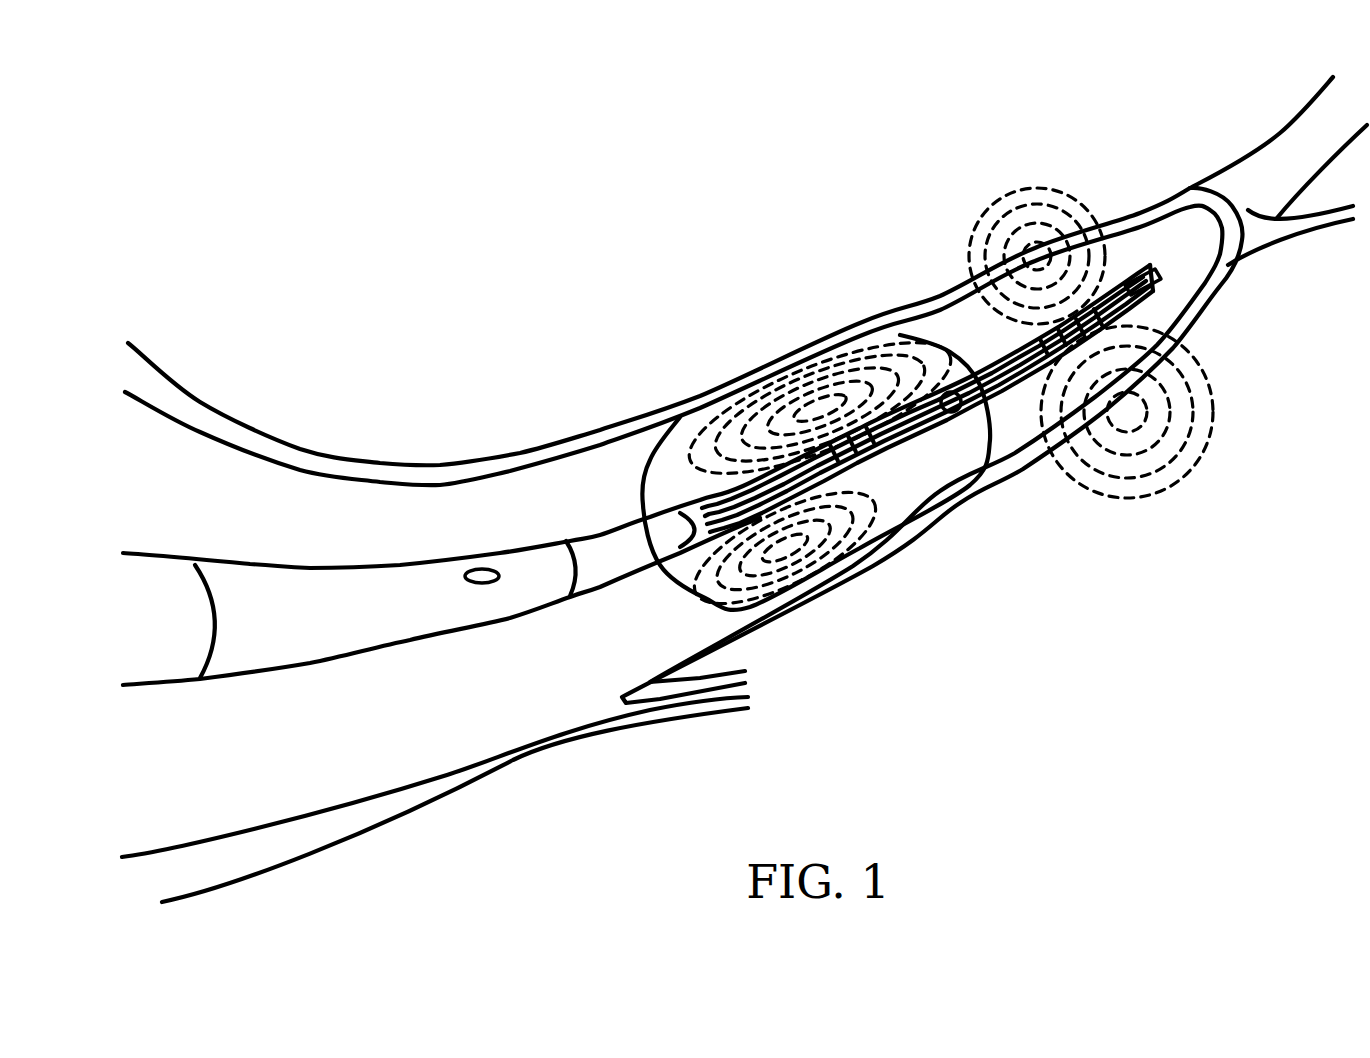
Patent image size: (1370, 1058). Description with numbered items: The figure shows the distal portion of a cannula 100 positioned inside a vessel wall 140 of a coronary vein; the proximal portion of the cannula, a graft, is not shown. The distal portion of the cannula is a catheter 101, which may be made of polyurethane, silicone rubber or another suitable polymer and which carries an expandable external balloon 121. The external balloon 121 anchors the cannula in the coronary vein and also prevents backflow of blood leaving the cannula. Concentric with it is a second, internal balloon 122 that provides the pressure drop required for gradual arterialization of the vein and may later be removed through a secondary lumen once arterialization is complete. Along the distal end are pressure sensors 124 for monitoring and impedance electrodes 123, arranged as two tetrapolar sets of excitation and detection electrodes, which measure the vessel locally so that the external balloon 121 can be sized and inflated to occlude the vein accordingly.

The cannula 100 is at (367, 608).
The catheter 101 is at (625, 557).
The external expandable balloon 121 is at (738, 444).
The internal balloon 122 is at (859, 419).
The impedance electrodes 123 is at (760, 507).
The pressure sensors 124 is at (1106, 288).
The vessel wall 140 is at (441, 464).